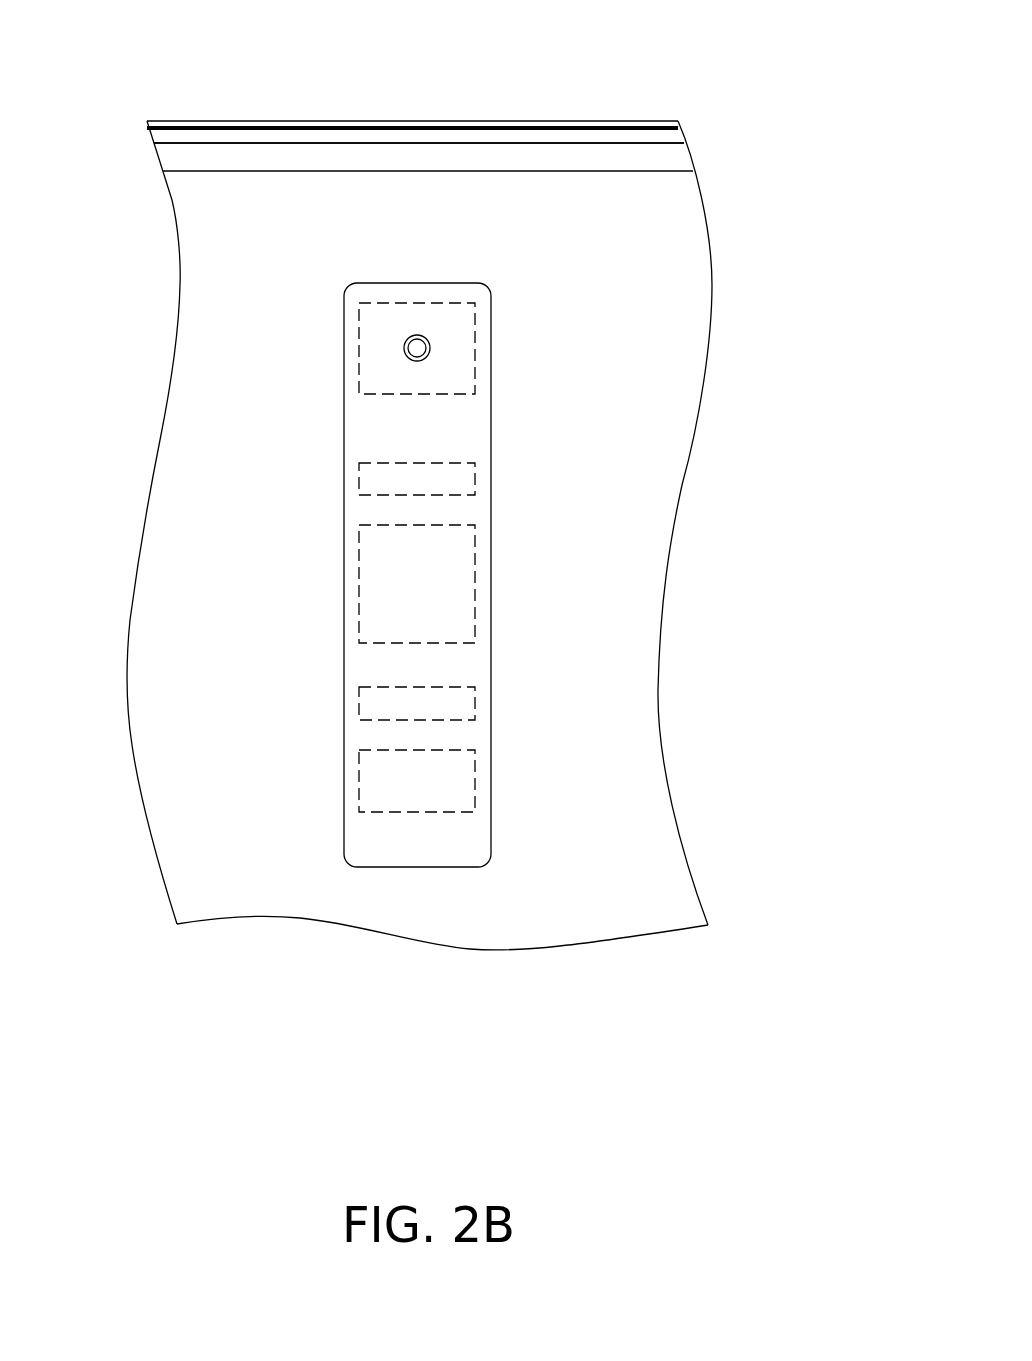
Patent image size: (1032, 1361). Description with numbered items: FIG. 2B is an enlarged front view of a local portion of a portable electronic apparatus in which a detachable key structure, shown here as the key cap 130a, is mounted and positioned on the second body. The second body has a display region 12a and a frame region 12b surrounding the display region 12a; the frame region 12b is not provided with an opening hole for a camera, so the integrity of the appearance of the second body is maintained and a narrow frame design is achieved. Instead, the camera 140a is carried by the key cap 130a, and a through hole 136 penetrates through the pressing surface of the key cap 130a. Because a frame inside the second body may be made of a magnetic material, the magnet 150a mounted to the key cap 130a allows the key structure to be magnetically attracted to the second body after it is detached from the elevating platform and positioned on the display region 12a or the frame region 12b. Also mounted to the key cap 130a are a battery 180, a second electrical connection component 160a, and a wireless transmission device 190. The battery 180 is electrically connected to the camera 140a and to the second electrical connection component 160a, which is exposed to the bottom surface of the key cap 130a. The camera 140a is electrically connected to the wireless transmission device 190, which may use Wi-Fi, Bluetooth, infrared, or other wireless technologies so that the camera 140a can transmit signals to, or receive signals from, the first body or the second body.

The display region 12a is at (302, 185).
The frame region 12b is at (203, 153).
The key cap 130a is at (363, 430).
The through hole 136 is at (418, 335).
The camera 140a is at (475, 338).
The wireless transmission device 190 is at (475, 474).
The magnet 150a is at (475, 569).
The battery 180 is at (475, 700).
The second electrical connection component 160a is at (475, 791).